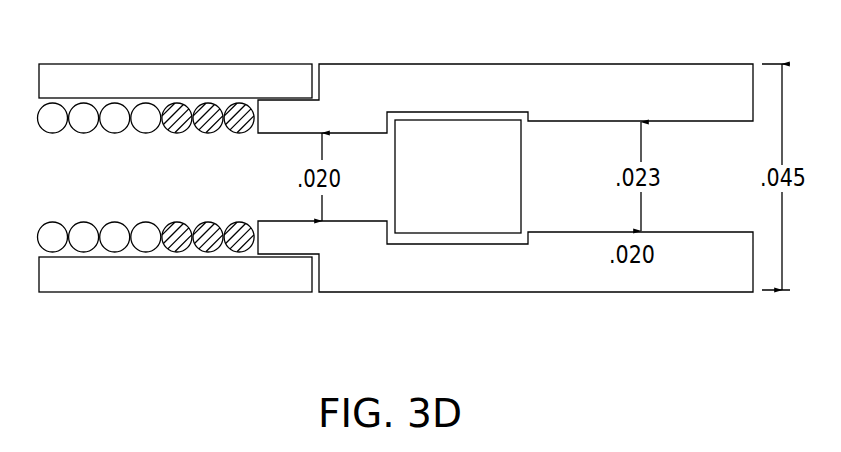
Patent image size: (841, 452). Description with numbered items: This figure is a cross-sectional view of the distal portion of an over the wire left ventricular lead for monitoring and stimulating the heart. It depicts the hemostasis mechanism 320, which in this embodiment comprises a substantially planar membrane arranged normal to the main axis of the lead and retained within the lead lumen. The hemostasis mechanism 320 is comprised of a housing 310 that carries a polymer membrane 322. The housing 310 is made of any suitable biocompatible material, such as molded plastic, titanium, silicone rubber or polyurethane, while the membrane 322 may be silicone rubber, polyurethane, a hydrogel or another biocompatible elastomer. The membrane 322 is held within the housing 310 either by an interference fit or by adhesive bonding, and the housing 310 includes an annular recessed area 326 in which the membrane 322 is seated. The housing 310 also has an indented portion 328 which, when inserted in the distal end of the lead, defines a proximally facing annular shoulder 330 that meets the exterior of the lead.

The housing 310 is at (396, 76).
The hemostasis mechanism 320 is at (549, 64).
The polymer membrane 322 is at (487, 235).
The annular recessed area 326 is at (463, 112).
The indented portion 328 is at (291, 254).
The proximally facing annular shoulder 330 is at (313, 276).